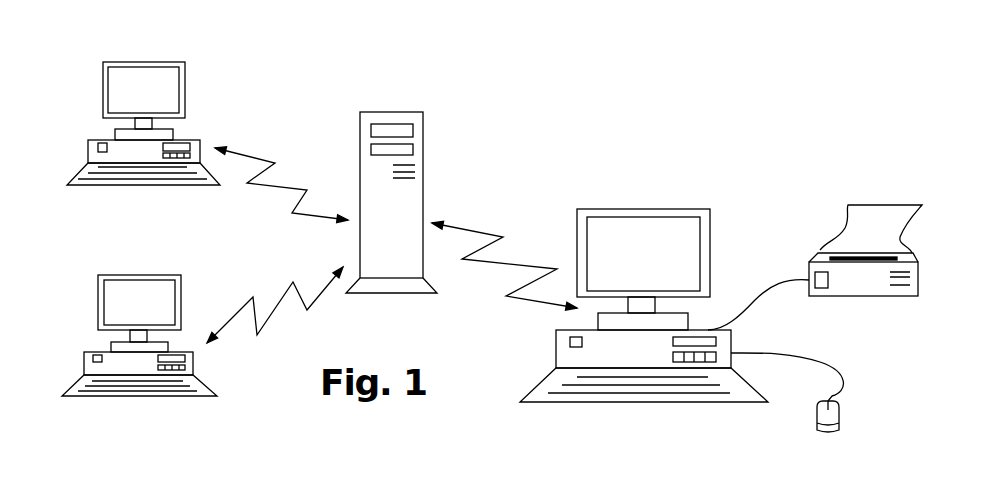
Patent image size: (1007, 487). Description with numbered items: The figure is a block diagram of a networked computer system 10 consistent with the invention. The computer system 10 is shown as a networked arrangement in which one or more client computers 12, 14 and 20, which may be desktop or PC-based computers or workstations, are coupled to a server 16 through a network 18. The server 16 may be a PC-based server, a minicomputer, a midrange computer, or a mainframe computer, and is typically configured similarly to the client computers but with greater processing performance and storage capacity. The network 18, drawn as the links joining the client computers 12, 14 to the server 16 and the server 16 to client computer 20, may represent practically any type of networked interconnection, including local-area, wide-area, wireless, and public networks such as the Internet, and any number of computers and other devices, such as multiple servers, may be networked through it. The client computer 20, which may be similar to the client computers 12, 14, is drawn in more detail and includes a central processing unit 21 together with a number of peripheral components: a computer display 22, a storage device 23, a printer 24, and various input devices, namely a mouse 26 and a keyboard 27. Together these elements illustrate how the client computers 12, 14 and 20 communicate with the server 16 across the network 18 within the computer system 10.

The computer system 10 is at (563, 120).
The client computer 12 is at (103, 80).
The client computer 14 is at (98, 279).
The server 16 is at (378, 112).
The network 18 is at (290, 189).
The client computer 20 is at (700, 210).
The central processing unit 21 is at (564, 354).
The computer display 22 is at (613, 211).
The storage device 23 is at (690, 361).
The printer 24 is at (826, 260).
The mouse 26 is at (840, 421).
The keyboard 27 is at (542, 398).